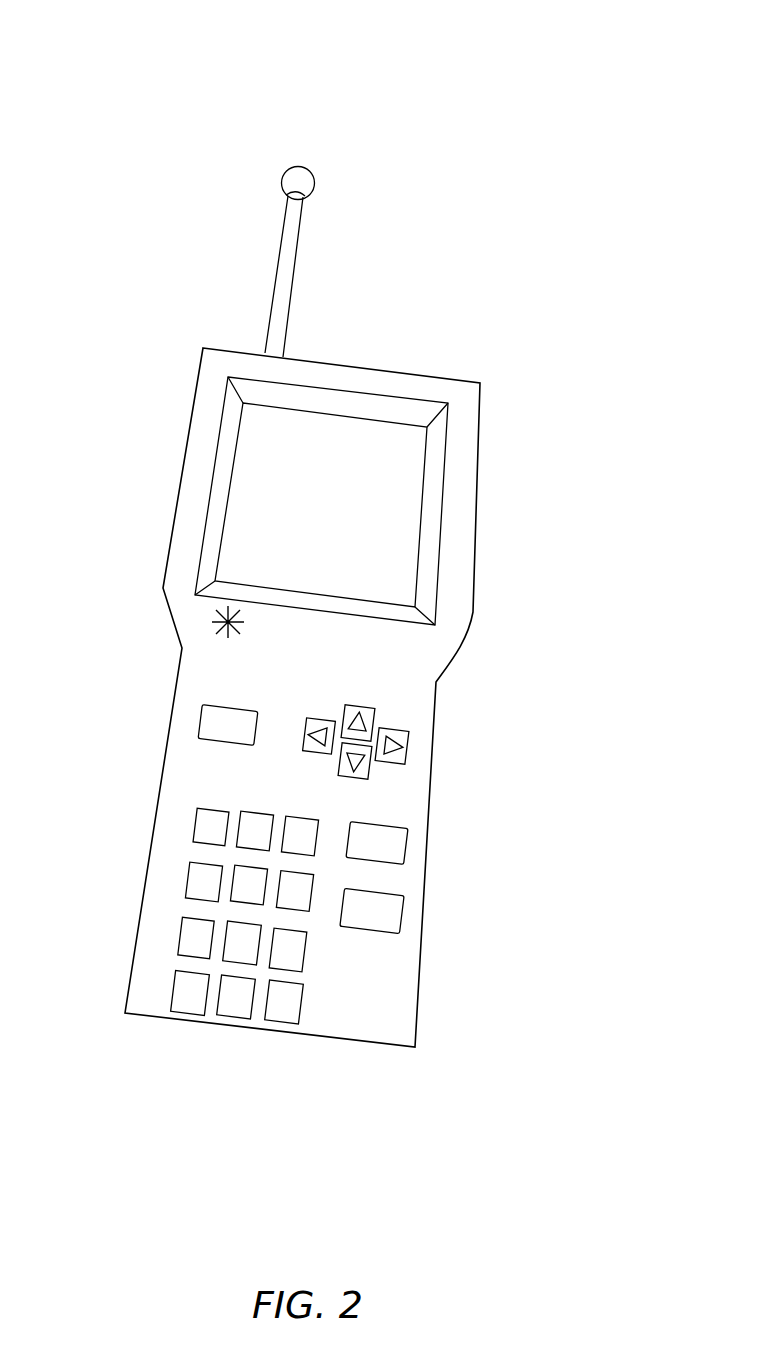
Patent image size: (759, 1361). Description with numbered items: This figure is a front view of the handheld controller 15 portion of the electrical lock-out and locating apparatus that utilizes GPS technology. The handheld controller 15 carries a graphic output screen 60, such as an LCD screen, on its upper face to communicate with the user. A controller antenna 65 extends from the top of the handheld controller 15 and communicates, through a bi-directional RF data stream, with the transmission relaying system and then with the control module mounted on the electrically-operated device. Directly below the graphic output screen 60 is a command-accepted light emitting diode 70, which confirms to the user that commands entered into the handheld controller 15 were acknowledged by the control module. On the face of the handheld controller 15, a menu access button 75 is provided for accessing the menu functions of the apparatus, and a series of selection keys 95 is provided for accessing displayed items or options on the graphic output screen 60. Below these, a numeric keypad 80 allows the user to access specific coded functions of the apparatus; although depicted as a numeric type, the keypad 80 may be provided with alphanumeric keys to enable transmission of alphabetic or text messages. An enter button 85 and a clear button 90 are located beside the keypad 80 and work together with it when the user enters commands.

The handheld controller 15 is at (625, 156).
The graphic output screen 60 is at (357, 513).
The controller antenna 65 is at (288, 260).
The command-accepted light emitting diode 70 is at (214, 611).
The menu access button 75 is at (198, 728).
The numeric keypad 80 is at (183, 936).
The enter button 85 is at (403, 842).
The clear button 90 is at (395, 928).
The selection keys 95 is at (407, 737).